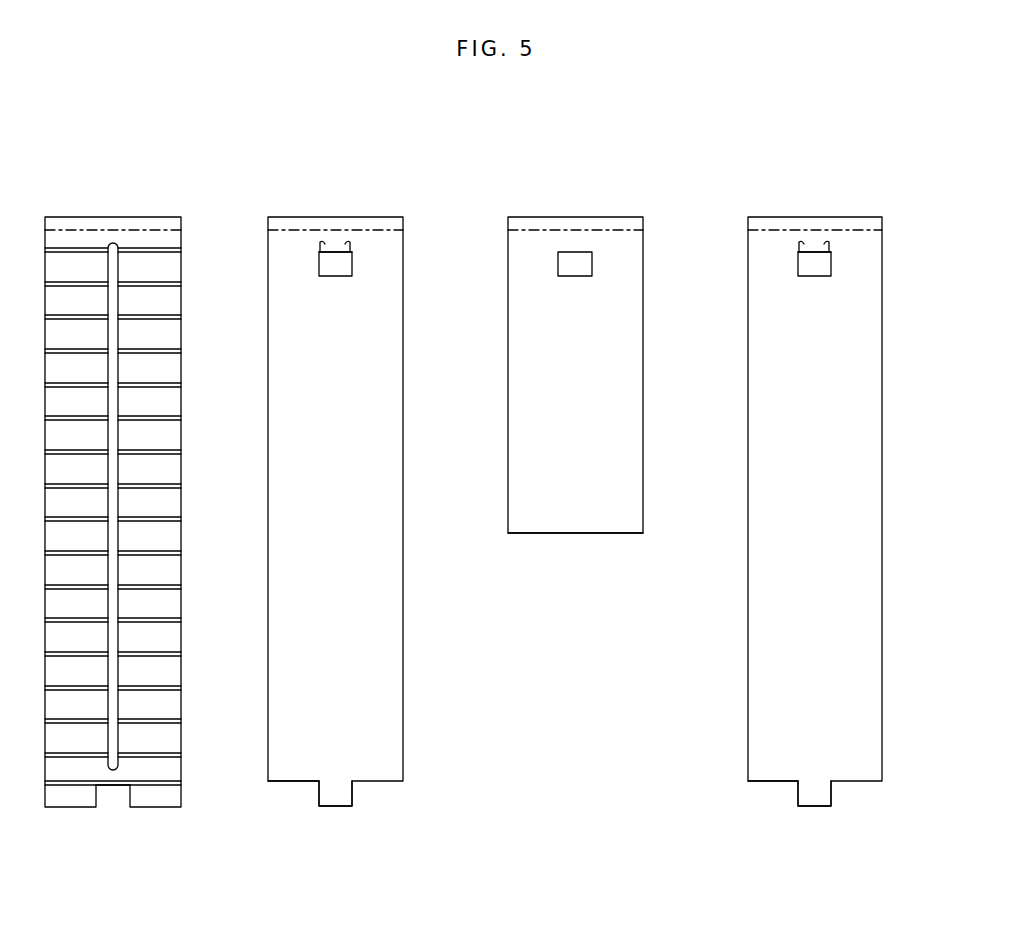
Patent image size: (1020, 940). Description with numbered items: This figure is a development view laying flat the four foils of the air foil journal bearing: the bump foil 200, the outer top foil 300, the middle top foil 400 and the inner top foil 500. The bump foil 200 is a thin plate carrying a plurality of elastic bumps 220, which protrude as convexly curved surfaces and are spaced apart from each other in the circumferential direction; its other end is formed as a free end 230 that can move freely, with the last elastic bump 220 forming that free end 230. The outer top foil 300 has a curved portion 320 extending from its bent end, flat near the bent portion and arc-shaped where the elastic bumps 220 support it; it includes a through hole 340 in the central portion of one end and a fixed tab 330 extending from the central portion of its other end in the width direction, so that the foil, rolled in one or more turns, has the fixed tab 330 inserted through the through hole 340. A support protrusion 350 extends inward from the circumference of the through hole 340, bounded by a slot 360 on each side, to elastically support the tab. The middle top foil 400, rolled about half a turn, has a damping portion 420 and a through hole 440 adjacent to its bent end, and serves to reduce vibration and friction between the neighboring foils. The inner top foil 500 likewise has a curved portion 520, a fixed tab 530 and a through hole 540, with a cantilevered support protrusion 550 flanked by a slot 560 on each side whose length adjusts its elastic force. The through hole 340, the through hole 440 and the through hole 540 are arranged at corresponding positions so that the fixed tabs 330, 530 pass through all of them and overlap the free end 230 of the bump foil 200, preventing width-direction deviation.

The bump foil 200 is at (75, 217).
The elastic bump 220 is at (149, 265).
The free end 230 is at (63, 797).
The outer top foil 300 is at (282, 217).
The curved portion 320 is at (290, 768).
The fixed tab 330 is at (333, 797).
The through hole 340 is at (115, 797).
The support protrusion 350 is at (336, 250).
The slot 360 is at (350, 262).
The middle top foil 400 is at (545, 217).
The damping portion 420 is at (575, 522).
The through hole 440 is at (578, 252).
The inner top foil 500 is at (776, 217).
The curved portion 520 is at (775, 768).
The fixed tab 530 is at (813, 797).
The through hole 540 is at (832, 262).
The support protrusion 550 is at (815, 250).
The slot 560 is at (831, 252).